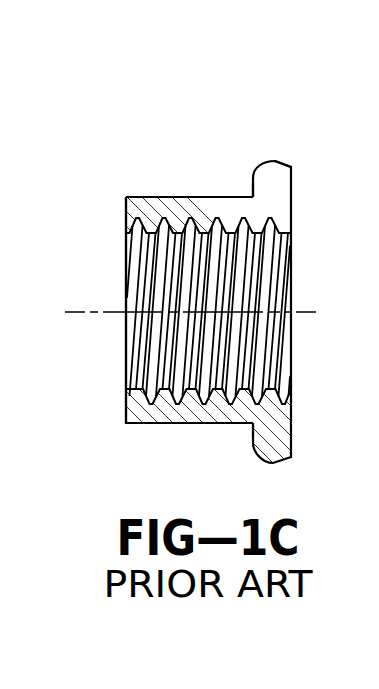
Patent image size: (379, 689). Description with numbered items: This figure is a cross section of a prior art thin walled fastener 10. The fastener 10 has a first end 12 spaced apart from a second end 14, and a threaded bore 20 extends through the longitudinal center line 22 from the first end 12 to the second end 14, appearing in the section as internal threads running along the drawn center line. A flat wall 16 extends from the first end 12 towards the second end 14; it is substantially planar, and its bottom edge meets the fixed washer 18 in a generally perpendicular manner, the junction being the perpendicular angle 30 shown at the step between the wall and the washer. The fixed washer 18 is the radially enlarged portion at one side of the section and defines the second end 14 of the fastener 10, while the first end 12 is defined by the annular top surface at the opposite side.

The thin walled fastener 10 is at (171, 149).
The first end 12 is at (115, 414).
The second end 14 is at (300, 427).
The flat wall 16 is at (152, 192).
The fixed washer 18 is at (264, 154).
The threaded bore 20 is at (138, 358).
The longitudinal center line 22 is at (75, 311).
The perpendicular angle 30 is at (238, 180).